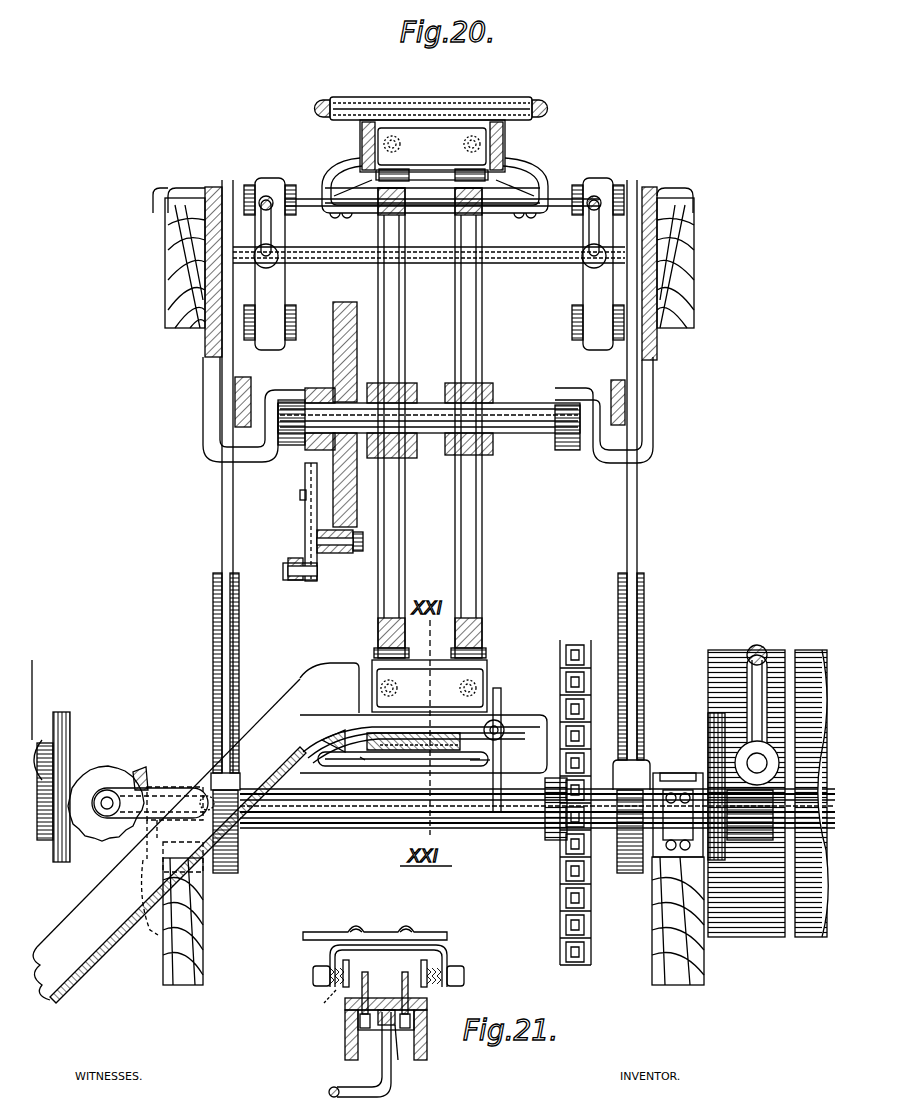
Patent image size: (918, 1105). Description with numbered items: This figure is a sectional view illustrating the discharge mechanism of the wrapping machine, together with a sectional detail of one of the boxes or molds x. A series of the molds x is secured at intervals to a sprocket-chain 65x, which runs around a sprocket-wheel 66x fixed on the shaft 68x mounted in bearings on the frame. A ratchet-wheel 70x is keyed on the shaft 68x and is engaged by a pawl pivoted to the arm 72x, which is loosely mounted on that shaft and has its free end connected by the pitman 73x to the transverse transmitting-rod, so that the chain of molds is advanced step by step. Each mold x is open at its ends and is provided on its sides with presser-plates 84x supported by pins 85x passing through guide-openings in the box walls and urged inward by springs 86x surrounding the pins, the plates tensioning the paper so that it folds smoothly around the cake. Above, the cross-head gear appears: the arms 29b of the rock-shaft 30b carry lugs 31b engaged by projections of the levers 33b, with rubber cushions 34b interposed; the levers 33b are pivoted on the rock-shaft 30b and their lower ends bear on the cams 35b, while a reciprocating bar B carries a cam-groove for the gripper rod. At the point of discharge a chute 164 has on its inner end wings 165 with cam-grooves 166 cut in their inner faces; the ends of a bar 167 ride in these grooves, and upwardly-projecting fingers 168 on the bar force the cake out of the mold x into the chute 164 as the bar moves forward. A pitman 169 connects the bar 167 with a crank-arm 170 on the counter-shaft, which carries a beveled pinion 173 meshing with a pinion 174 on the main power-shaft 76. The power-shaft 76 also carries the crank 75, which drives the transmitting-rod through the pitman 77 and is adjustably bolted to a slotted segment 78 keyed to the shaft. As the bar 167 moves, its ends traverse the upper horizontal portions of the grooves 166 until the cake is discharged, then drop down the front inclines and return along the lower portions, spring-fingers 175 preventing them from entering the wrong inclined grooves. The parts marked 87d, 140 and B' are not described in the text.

In FIG. 20, the top rail 87d is at (433, 97).
In FIG. 20, the box or mold x is at (432, 416).
In FIG. 21, the box or mold x is at (398, 964).
In FIG. 20, the sprocket-chain 65x is at (409, 176).
In FIG. 21, the sprocket-chain 65x is at (375, 925).
In FIG. 20, the rail plate 140 is at (434, 210).
In FIG. 20, the sprocket-wheel 66x is at (405, 318).
In FIG. 20, the rock-shaft 30b is at (429, 268).
In FIG. 20, the lug 31b is at (281, 182).
In FIG. 20, the arm 29b is at (285, 228).
In FIG. 20, the rubber cushion 34b is at (288, 330).
In FIG. 20, the ratchet-wheel 70x is at (335, 383).
In FIG. 20, the shaft 68x is at (516, 408).
In FIG. 20, the block B' is at (258, 395).
In FIG. 20, the reciprocating bar B is at (603, 394).
In FIG. 20, the lever 33b is at (222, 527).
In FIG. 20, the cam 35b is at (215, 647).
In FIG. 20, the arm 72x is at (305, 522).
In FIG. 20, the pitman 73x is at (298, 583).
In FIG. 20, the wing 165 is at (423, 718).
In FIG. 20, the cam-groove 166 is at (423, 750).
In FIG. 21, the cam-groove 166 is at (358, 1033).
In FIG. 20, the bar 167 is at (487, 766).
In FIG. 21, the bar 167 is at (395, 1030).
In FIG. 20, the spring-finger 175 is at (471, 734).
In FIG. 20, the finger 168 is at (501, 702).
In FIG. 21, the finger 168 is at (386, 1017).
In FIG. 20, the pitman 169 is at (345, 832).
In FIG. 21, the pitman 169 is at (329, 1093).
In FIG. 20, the power-shaft 76 is at (525, 830).
In FIG. 20, the crank 75 is at (744, 847).
In FIG. 20, the pitman 77 is at (757, 690).
In FIG. 20, the slotted segment 78 is at (70, 737).
In FIG. 20, the beveled pinion 173 is at (107, 790).
In FIG. 20, the crank-arm 170 is at (153, 861).
In FIG. 20, the pinion 174 is at (146, 774).
In FIG. 20, the chute 164 is at (169, 841).
In FIG. 21, the presser-plate 84x is at (385, 982).
In FIG. 21, the pin 85x is at (464, 976).
In FIG. 21, the spring 86x is at (322, 1003).